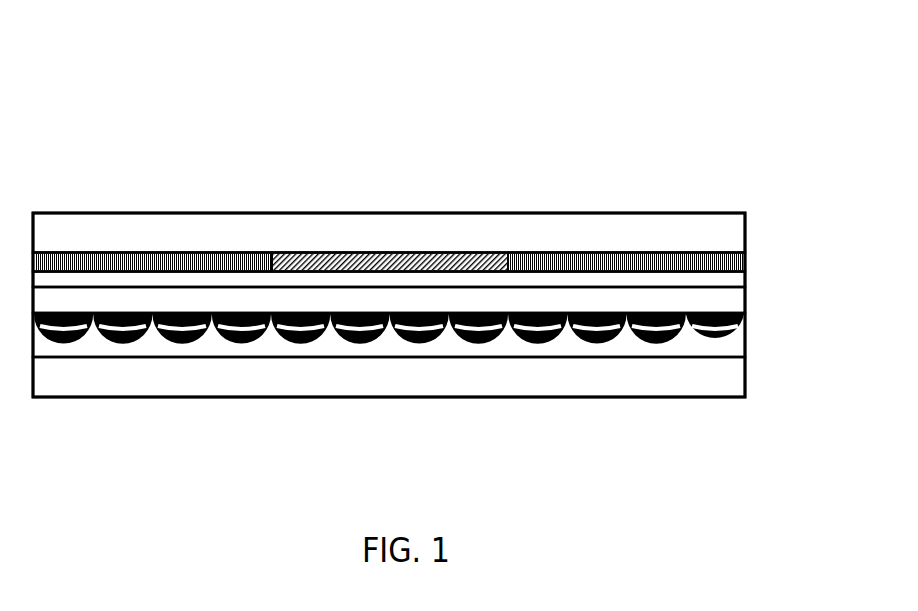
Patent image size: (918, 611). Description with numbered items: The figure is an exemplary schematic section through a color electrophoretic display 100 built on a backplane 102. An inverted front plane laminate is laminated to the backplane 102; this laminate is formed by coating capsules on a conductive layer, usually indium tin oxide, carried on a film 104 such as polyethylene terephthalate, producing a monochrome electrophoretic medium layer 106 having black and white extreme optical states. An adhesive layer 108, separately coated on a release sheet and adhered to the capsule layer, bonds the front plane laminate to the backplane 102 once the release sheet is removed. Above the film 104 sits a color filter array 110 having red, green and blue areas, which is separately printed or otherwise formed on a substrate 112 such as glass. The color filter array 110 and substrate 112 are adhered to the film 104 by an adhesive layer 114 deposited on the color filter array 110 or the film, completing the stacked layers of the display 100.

The color electrophoretic display 100 is at (44, 90).
The backplane 102 is at (733, 380).
The film 104 is at (734, 302).
The monochrome electrophoretic medium layer 106 is at (747, 323).
The adhesive layer 108 is at (733, 350).
The color filter array 110 is at (747, 260).
The substrate 112 is at (730, 233).
The adhesive layer 114 is at (735, 279).